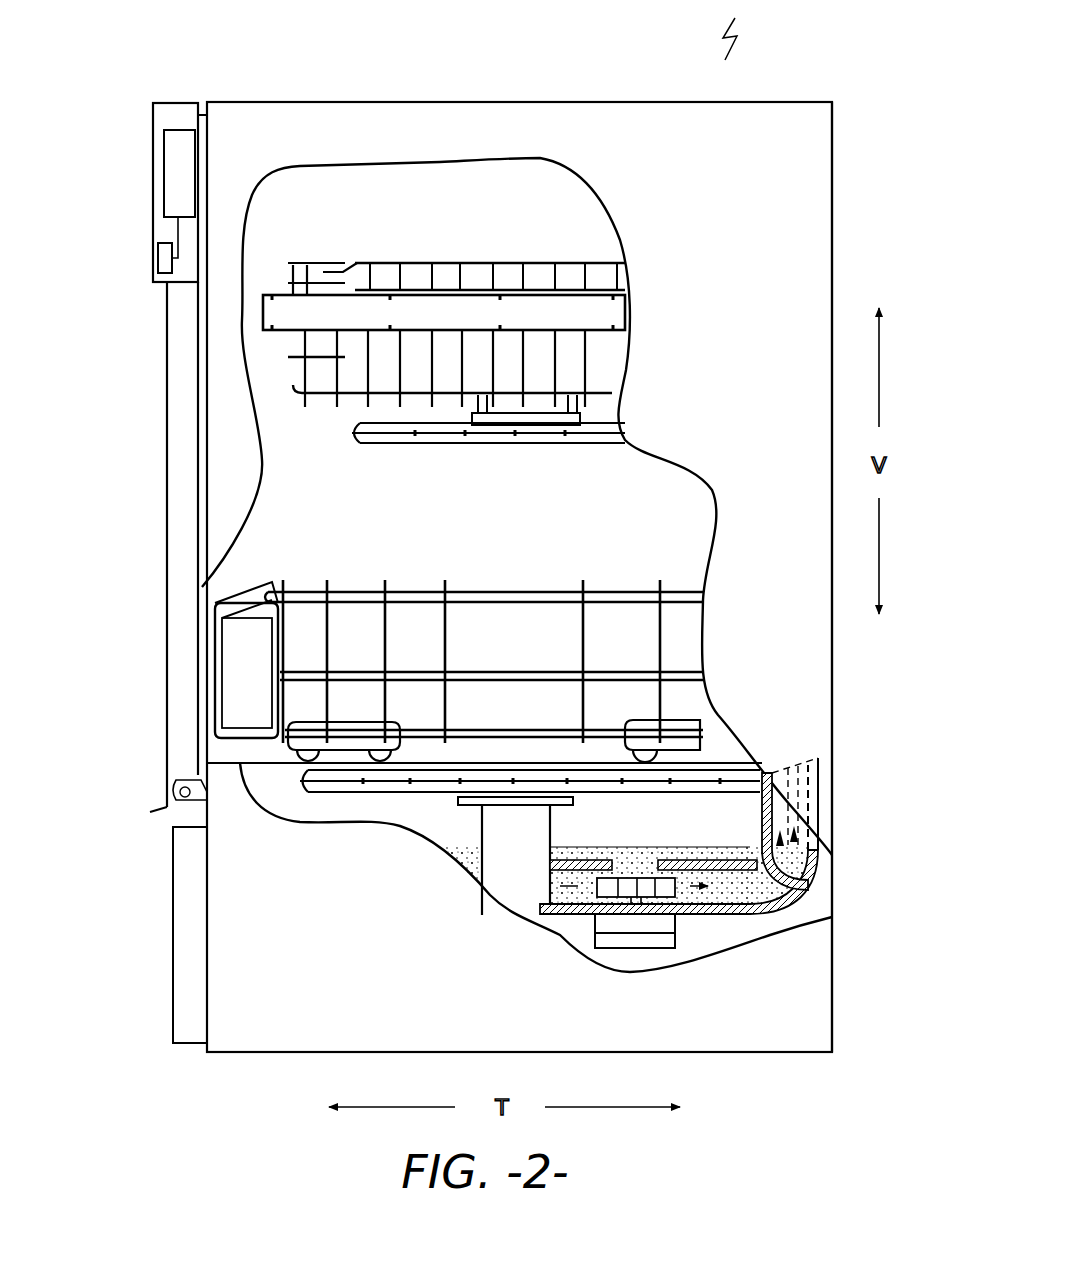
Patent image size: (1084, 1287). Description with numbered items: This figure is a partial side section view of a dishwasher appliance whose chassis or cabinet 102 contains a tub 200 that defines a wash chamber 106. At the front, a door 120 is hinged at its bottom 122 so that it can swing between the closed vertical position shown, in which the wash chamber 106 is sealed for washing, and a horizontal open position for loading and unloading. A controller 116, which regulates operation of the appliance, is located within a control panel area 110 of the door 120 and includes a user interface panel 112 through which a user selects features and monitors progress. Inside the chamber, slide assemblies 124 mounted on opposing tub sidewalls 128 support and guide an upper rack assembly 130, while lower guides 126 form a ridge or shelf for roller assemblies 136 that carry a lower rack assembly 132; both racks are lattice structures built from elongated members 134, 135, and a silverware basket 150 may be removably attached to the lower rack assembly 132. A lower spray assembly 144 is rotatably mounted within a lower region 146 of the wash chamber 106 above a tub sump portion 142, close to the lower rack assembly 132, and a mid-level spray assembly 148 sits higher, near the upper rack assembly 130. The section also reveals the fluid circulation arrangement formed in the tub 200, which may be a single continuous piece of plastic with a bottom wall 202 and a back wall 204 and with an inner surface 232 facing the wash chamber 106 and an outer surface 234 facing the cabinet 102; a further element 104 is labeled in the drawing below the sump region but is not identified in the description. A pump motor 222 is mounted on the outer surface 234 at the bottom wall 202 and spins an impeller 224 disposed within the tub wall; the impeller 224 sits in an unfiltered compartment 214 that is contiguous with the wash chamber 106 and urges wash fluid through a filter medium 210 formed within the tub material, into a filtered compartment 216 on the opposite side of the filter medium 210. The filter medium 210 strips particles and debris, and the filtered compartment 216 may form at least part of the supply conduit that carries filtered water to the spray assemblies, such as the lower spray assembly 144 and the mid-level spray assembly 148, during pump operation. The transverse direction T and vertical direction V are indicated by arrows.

The cabinet 102 is at (808, 228).
The tub 104 is at (612, 957).
The wash chamber 106 is at (298, 510).
The control panel area 110 is at (146, 177).
The user interface panel 112 is at (157, 262).
The controller 116 is at (176, 150).
The door 120 is at (183, 447).
The bottom 122 is at (163, 806).
The slide assemblies 124 is at (490, 307).
The lower guides 126 is at (241, 770).
The tub sidewalls 128 is at (352, 205).
The upper rack assembly 130 is at (567, 256).
The lower rack assembly 132 is at (482, 588).
The elongated members 134 is at (333, 396).
The elongated members 135 is at (520, 281).
The roller assemblies 136 is at (706, 748).
The tub sump portion 142 is at (236, 772).
The lower spray assembly 144 is at (383, 797).
The lower region 146 is at (612, 748).
The mid-level spray assembly 148 is at (492, 449).
The silverware basket 150 is at (233, 666).
The tub 200 is at (386, 531).
The bottom wall 202 is at (570, 933).
The back wall 204 is at (800, 800).
The filter medium 210 is at (815, 770).
The unfiltered compartment 214 is at (797, 808).
The filtered compartment 216 is at (780, 808).
The motor 222 is at (680, 950).
The impeller 224 is at (654, 874).
The inner surface 232 is at (722, 850).
The outer surface 234 is at (716, 920).